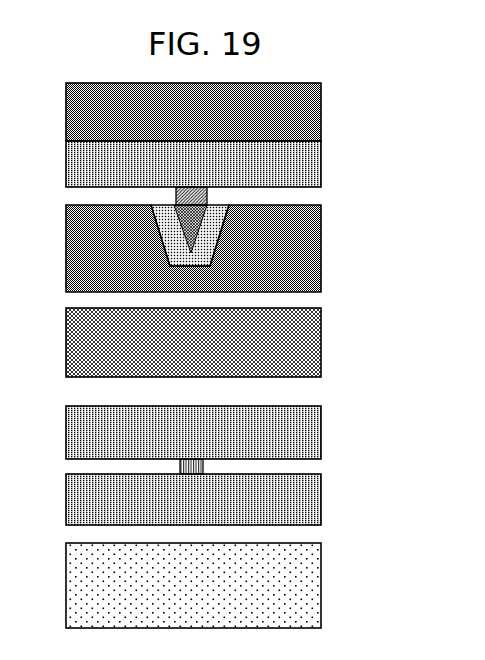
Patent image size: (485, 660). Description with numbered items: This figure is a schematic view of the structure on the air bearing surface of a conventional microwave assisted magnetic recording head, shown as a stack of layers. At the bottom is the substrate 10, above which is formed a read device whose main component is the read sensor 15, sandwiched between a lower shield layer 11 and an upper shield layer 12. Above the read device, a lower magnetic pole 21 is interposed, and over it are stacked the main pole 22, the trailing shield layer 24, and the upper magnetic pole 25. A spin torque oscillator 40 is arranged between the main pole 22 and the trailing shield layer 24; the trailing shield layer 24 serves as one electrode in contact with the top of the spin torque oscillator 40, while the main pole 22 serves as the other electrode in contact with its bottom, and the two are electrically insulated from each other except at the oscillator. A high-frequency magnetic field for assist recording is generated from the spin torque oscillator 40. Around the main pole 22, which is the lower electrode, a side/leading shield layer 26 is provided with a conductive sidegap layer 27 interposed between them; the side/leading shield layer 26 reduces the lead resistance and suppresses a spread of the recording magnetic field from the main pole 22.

The upper magnetic pole 25 is at (313, 112).
The trailing shield layer 24 is at (313, 148).
The spin torque oscillator 40 is at (199, 188).
The main pole 22 is at (188, 204).
The conductive sidegap layer 27 is at (202, 224).
The side/leading shield layer 26 is at (313, 254).
The lower magnetic pole 21 is at (313, 332).
The upper shield layer 12 is at (303, 415).
The read sensor 15 is at (195, 457).
The lower shield layer 11 is at (303, 495).
The substrate 10 is at (303, 573).